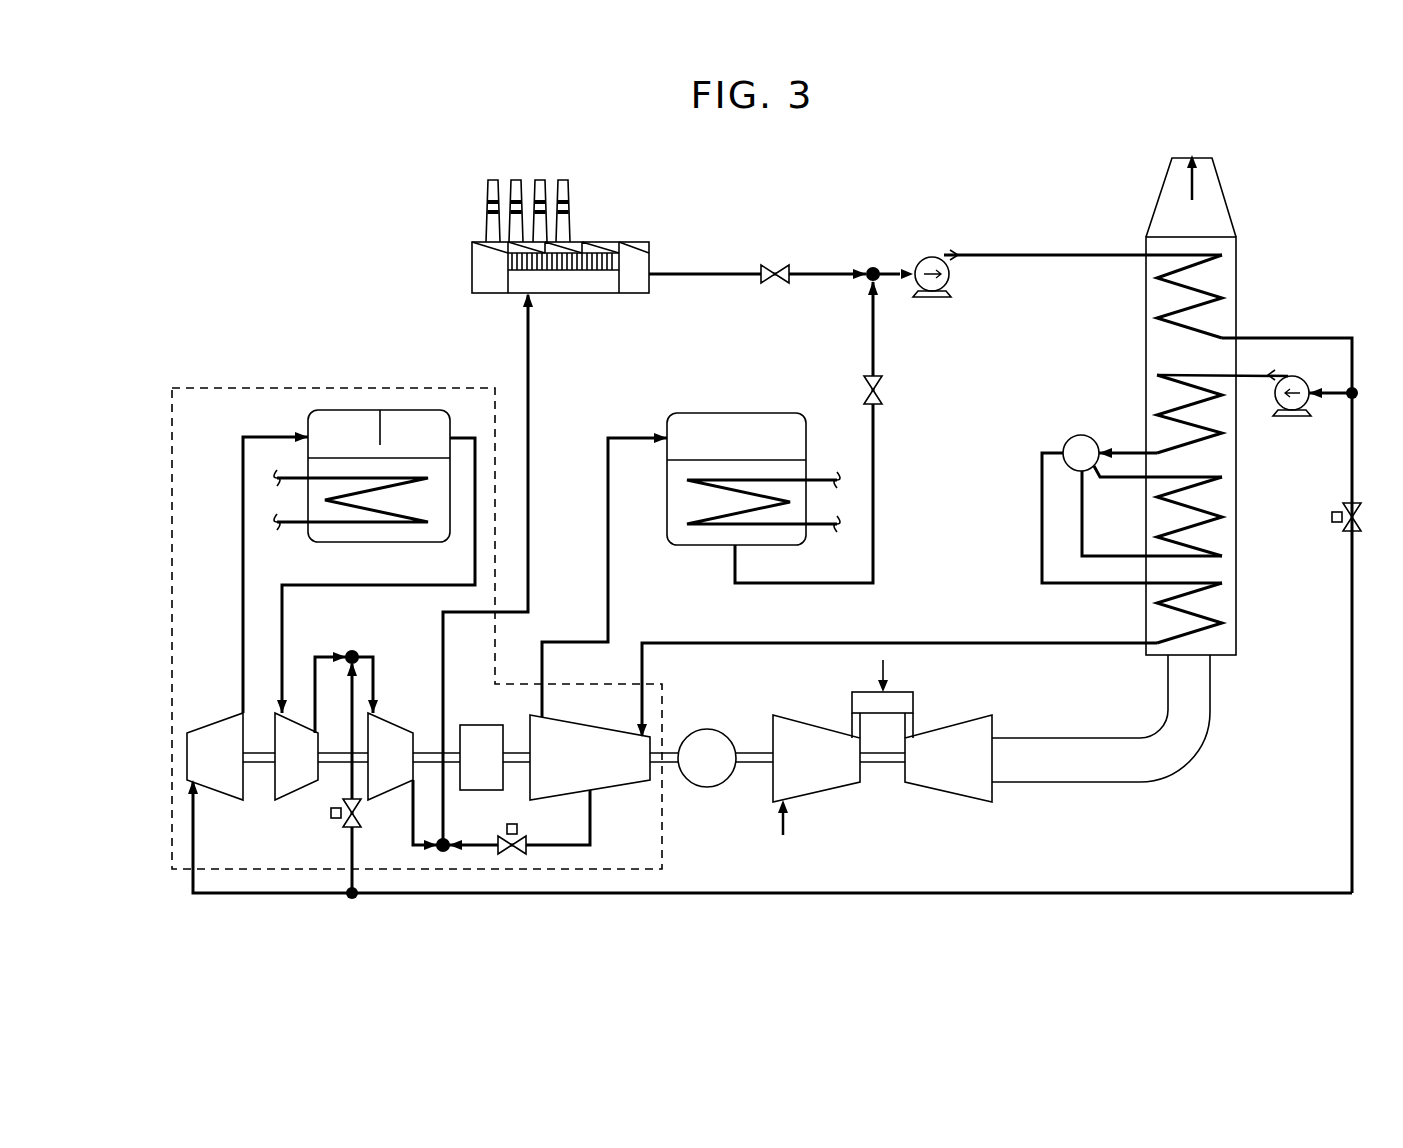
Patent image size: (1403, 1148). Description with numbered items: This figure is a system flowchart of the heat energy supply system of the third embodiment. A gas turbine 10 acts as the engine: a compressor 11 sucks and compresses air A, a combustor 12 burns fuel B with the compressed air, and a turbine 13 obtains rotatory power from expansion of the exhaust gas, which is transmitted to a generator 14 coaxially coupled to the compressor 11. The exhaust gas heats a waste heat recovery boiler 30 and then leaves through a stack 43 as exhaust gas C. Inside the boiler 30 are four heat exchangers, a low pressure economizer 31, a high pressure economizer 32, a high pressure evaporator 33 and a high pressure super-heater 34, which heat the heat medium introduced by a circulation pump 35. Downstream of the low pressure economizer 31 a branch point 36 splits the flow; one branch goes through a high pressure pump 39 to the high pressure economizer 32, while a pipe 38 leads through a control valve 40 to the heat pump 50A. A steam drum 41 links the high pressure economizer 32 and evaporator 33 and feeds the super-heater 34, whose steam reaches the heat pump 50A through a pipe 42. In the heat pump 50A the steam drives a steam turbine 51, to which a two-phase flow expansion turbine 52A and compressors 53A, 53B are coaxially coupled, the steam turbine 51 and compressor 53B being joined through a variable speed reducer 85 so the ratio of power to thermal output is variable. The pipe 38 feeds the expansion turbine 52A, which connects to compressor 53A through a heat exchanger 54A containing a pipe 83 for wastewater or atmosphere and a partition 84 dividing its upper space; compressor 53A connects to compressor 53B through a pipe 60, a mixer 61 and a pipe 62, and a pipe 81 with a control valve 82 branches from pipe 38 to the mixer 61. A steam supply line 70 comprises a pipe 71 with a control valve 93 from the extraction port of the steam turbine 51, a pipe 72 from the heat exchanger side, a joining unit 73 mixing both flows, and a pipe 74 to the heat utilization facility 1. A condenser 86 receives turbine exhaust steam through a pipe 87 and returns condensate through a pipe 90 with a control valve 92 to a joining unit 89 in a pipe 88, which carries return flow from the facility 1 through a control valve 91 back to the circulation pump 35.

The heat utilization facility 1 is at (610, 242).
The gas turbine 10 is at (882, 796).
The compressor 11 is at (799, 771).
The combustor 12 is at (915, 697).
The turbine 13 is at (931, 771).
The generator 14 is at (713, 729).
The boiler 30 is at (1146, 333).
The low pressure economizer 31 is at (1230, 297).
The high pressure economizer 32 is at (1146, 418).
The high pressure evaporator 33 is at (1237, 513).
The high pressure super-heater 34 is at (1237, 620).
The circulation pump 35 is at (937, 257).
The branch point 36 is at (1350, 397).
The pipe 38 is at (1255, 891).
The high pressure pump 39 is at (1282, 416).
The control valve 40 is at (1333, 522).
The steam drum 41 is at (1066, 440).
The pipe 42 is at (948, 641).
The stack 43 is at (1226, 197).
The heat pump 50A is at (212, 388).
The steam turbine 51 is at (573, 771).
The two-phase flow expansion turbine 52A is at (197, 775).
The compressor 53A is at (279, 775).
The compressor 53B is at (372, 775).
The heat exchanger 54A is at (450, 410).
The pipe 60 is at (335, 656).
The mixer 61 is at (353, 650).
The pipe 62 is at (376, 660).
The steam supply line 70 is at (550, 406).
The pipe 71 is at (592, 815).
The pipe 72 is at (410, 812).
The joining unit 73 is at (447, 838).
The pipe 74 is at (530, 518).
The pipe 81 is at (351, 858).
The control valve 82 is at (331, 813).
The pipe 83 is at (290, 528).
The partition 84 is at (380, 425).
The variable speed reducer 85 is at (467, 771).
The condenser 86 is at (738, 413).
The pipe 87 is at (609, 592).
The pipe 88 is at (708, 272).
The joining unit 89 is at (876, 267).
The pipe 90 is at (876, 490).
The control valve 91 is at (786, 266).
The control valve 92 is at (884, 390).
The control valve 93 is at (520, 828).